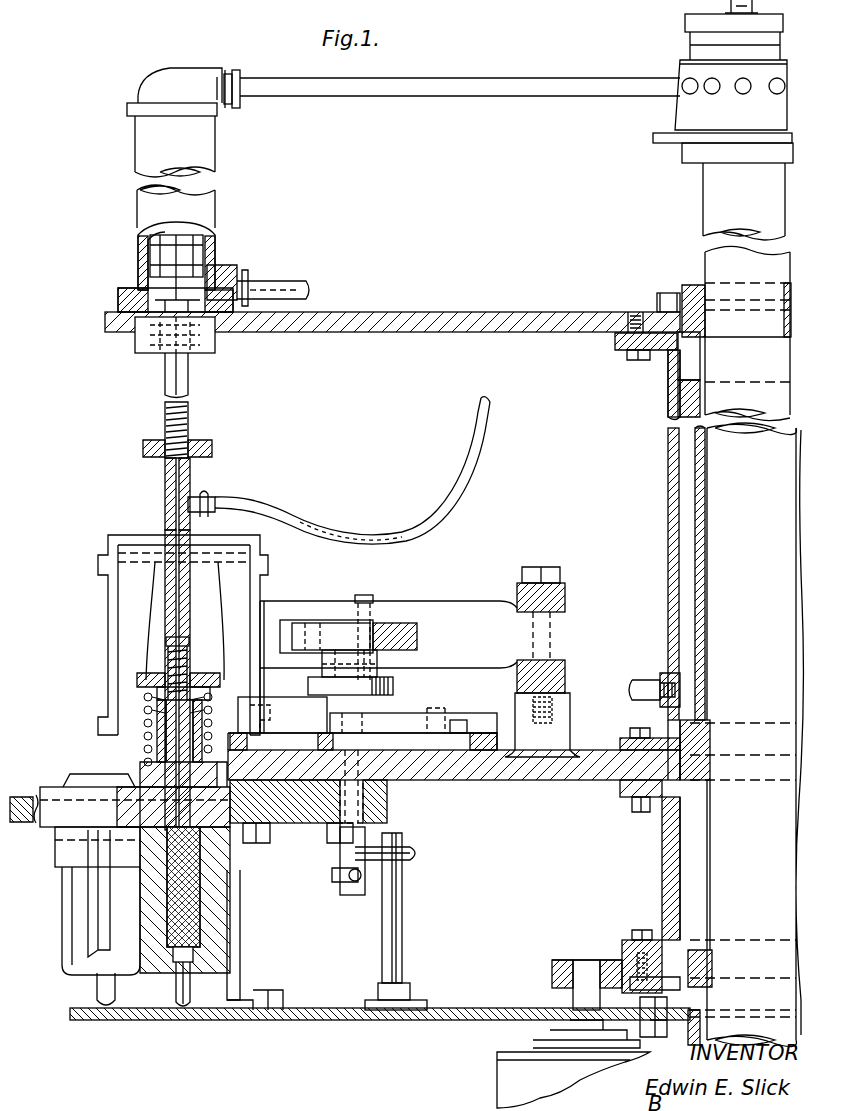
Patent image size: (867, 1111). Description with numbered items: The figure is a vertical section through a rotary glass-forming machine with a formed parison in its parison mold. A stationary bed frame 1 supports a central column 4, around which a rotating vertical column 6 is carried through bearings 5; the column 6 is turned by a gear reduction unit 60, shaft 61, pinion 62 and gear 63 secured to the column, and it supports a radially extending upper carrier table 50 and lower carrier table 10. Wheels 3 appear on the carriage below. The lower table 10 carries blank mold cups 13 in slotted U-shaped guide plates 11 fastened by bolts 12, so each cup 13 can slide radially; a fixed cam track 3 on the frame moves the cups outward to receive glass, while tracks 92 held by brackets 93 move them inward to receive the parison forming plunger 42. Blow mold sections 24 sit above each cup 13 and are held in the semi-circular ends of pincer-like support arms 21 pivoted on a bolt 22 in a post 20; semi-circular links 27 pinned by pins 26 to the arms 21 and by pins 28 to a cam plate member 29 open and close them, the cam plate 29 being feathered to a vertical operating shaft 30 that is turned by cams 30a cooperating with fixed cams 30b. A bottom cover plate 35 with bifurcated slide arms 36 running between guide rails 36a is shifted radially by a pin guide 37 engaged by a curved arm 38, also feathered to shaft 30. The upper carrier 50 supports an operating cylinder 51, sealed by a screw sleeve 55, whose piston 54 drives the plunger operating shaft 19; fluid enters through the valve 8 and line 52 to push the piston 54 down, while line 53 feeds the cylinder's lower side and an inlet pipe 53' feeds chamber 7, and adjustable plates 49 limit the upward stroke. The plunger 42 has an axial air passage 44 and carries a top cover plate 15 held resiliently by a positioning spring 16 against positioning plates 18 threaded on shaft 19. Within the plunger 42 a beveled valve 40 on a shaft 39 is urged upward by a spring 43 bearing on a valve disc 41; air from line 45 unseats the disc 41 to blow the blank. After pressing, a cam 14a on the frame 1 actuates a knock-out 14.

The bed frame 1 is at (330, 1020).
The cam track 3 is at (236, 917).
The column 4 is at (717, 487).
The bearings 5 is at (690, 328).
The vertical column 6 is at (666, 858).
The chamber 7 is at (686, 553).
The valve 8 is at (695, 44).
The lower carrier table 10 is at (572, 780).
The slotted guide plate 11 is at (384, 813).
The bolts 12 is at (325, 833).
The blank mold cup 13 is at (66, 886).
The knock-out 14 is at (100, 991).
The cam 14a is at (178, 1006).
The cover plate member 15 is at (145, 770).
The positioning spring 16 is at (145, 702).
The positioning plates 18 is at (140, 686).
The plunger operating shaft 19 is at (190, 408).
The post 20 is at (567, 712).
The blow mold section support members 21 is at (440, 605).
The pivot bolt 22 is at (538, 574).
The blow mold sections 24 is at (125, 582).
The pin 26 is at (362, 598).
The operating links 27 is at (301, 622).
The pin 28 is at (330, 666).
The cam plate member 29 is at (394, 686).
The operating shaft 30 is at (342, 855).
The cams 30a is at (420, 853).
The fixed cams 30b is at (402, 935).
The bottom cover plate 35 is at (277, 710).
The slide arms 36 is at (402, 740).
The guide rails 36a is at (481, 750).
The pin guide 37 is at (443, 716).
The operating arm 38 is at (456, 722).
The operating shaft 39 is at (145, 718).
The valve 40 is at (170, 812).
The valve disc 41 is at (187, 658).
The plunger 42 is at (190, 800).
The spring 43 is at (175, 658).
The air passage 44 is at (175, 620).
The line 45 is at (273, 507).
The adjustable plates 49 is at (145, 450).
The upper carrier table 50 is at (432, 318).
The operating cylinder 51 is at (212, 205).
The line 52 is at (444, 95).
The line 53 is at (258, 278).
The inlet pipe 53' is at (650, 700).
The piston 54 is at (142, 266).
The screw sleeve 55 is at (140, 350).
The gear reduction unit 60 is at (505, 1075).
The shaft 61 is at (585, 998).
The pinion 62 is at (560, 972).
The gear 63 is at (620, 965).
The tracks 92 is at (135, 846).
The brackets 93 is at (90, 912).